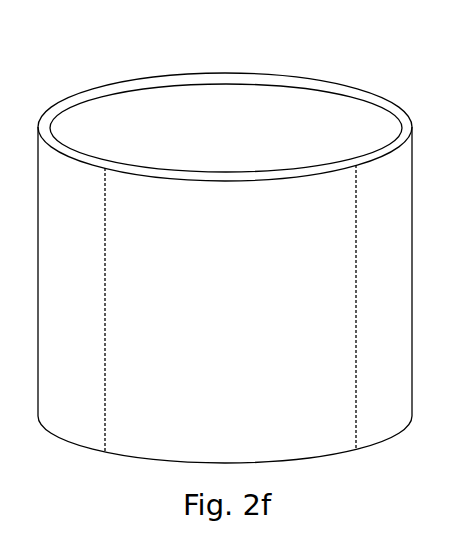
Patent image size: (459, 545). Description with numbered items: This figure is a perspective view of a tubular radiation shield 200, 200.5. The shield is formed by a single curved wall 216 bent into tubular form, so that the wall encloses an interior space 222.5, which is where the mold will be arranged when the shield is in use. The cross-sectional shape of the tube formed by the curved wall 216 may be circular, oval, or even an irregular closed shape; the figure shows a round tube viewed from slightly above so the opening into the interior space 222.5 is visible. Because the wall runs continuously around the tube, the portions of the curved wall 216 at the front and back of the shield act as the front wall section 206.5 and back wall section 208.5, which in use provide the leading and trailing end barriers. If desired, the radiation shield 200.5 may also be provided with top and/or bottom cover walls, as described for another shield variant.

The radiation shield 200 is at (223, 247).
The radiation shield 200.5 is at (223, 252).
The curved wall 216 is at (253, 78).
The interior space 222.5 is at (315, 102).
The back wall section 208.5 is at (74, 423).
The front wall section 206.5 is at (382, 428).